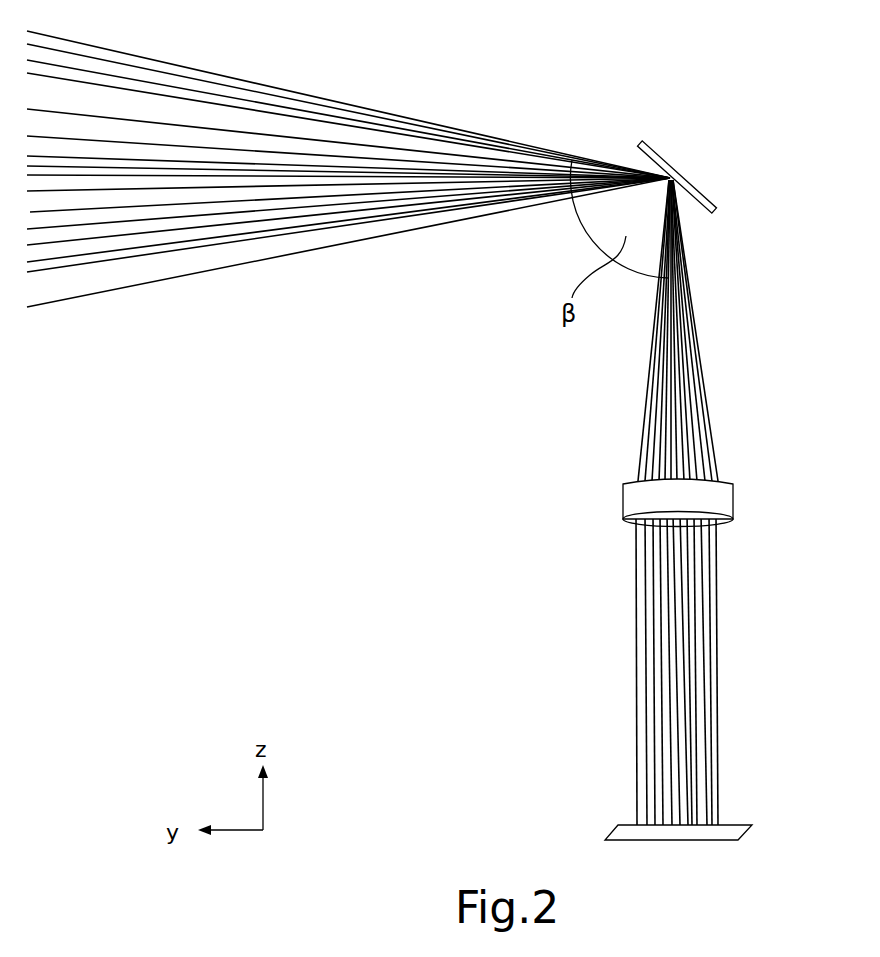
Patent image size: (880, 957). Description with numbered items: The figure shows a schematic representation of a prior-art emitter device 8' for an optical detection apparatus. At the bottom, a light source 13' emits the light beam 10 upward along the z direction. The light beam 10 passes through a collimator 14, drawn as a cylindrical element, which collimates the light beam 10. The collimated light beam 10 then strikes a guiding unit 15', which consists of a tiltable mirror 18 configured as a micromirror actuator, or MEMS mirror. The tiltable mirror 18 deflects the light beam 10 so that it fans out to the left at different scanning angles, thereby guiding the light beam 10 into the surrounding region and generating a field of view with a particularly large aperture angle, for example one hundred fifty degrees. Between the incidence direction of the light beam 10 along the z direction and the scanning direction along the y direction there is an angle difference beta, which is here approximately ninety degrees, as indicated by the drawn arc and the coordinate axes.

The emitter device 8' is at (646, 66).
The light beam 10 is at (415, 155).
The tiltable mirror 18 is at (665, 162).
The guiding unit 15' is at (743, 154).
The collimator 14 is at (725, 498).
The light source 13' is at (696, 803).